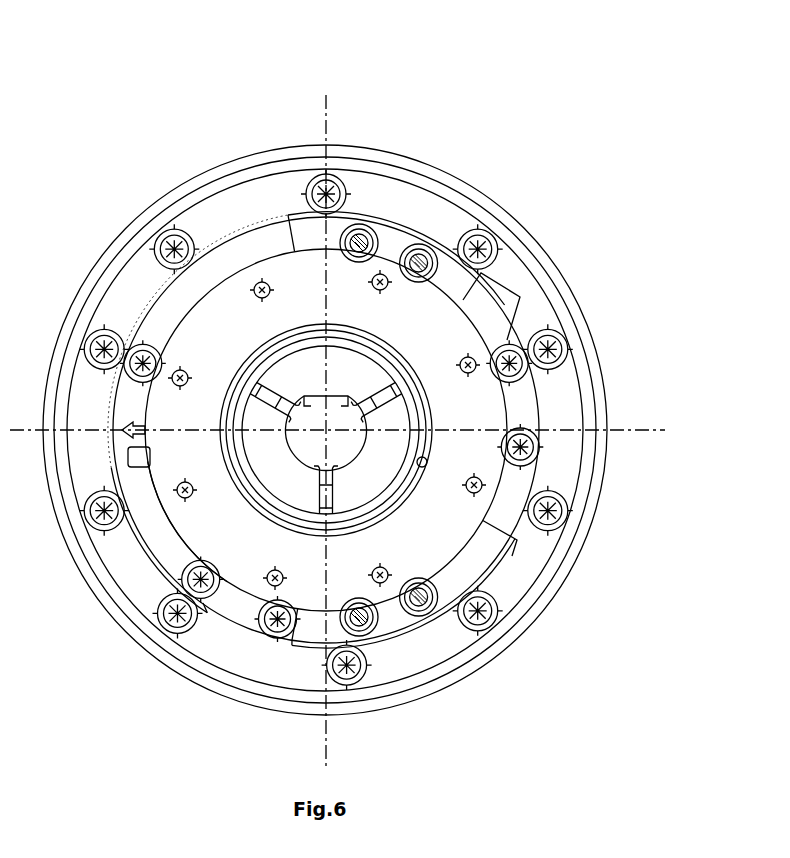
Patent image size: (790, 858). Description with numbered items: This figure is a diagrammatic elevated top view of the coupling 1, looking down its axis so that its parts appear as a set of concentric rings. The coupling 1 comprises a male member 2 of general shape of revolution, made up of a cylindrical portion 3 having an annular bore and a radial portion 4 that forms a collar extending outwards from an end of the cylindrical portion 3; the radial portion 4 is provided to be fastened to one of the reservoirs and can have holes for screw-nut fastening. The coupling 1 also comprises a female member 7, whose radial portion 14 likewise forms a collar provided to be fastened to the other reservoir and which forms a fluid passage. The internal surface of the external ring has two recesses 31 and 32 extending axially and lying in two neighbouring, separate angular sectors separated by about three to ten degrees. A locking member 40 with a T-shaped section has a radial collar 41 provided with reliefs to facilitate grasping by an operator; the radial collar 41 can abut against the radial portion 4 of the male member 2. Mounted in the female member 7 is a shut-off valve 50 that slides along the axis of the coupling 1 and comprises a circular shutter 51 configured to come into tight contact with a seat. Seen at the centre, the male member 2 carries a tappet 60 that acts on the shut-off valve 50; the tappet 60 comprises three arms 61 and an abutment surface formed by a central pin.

The coupling 1 is at (480, 96).
The male member 2 is at (471, 305).
The cylindrical portion 3 is at (418, 462).
The radial portion 4 is at (327, 430).
The female member 7 is at (589, 288).
The radial portion 14 is at (590, 306).
The recess 31 is at (184, 514).
The recess 32 is at (173, 340).
The locking member 40 is at (554, 393).
The radial collar 41 is at (404, 584).
The shut-off valve 50 is at (280, 527).
The circular shutter 51 is at (326, 430).
The tappet 60 is at (326, 433).
The arm 61 is at (333, 480).